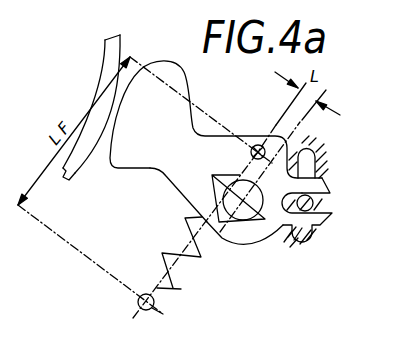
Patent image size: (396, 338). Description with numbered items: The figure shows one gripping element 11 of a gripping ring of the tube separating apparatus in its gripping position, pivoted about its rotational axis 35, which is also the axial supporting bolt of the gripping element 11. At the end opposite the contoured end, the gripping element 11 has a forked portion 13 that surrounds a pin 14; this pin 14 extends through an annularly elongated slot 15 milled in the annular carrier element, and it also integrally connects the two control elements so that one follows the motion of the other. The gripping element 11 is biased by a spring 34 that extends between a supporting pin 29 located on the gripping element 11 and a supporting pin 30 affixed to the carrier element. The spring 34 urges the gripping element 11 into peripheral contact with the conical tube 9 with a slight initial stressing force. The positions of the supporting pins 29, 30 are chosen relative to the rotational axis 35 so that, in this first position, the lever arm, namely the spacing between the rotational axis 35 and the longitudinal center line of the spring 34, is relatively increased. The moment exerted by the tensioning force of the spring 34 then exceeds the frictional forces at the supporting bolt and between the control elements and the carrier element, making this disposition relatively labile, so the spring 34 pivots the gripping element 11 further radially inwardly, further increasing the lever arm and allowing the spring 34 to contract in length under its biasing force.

The tube 9 is at (107, 49).
The gripping element 11 is at (186, 78).
The forked portion 13 is at (328, 189).
The pin 14 is at (314, 205).
The annularly elongated slot 15 is at (320, 164).
The supporting pin 29 is at (258, 144).
The supporting pin 30 is at (137, 305).
The spring 34 is at (181, 289).
The rotational axis 35 is at (244, 212).